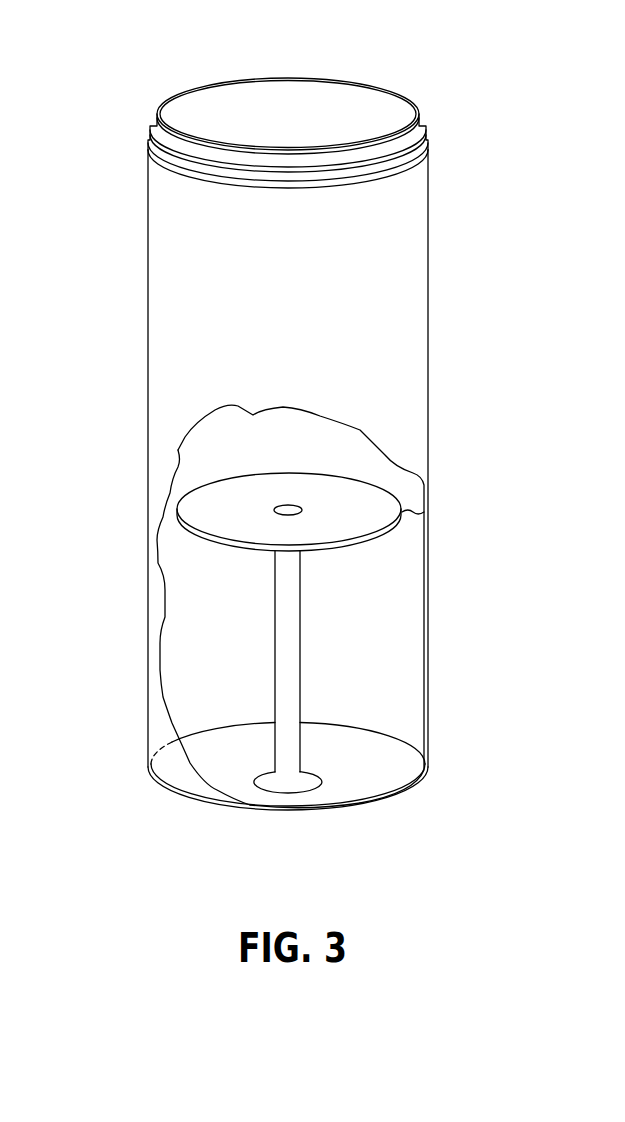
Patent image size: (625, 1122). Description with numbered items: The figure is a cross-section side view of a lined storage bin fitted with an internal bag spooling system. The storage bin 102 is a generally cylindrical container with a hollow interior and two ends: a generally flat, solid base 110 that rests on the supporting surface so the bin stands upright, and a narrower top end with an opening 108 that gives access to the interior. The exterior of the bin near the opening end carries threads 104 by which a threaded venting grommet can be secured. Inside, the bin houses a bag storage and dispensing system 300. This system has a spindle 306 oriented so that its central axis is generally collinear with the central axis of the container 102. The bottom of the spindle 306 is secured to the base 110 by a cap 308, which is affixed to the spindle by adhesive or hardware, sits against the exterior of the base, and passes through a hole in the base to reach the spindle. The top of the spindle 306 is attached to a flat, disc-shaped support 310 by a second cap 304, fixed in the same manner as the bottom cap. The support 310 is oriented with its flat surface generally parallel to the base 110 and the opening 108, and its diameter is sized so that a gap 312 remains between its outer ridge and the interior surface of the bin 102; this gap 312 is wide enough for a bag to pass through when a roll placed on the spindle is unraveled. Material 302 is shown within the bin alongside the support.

The storage bin 102 is at (148, 333).
The threads 104 is at (421, 118).
The opening 108 is at (234, 113).
The base 110 is at (367, 767).
The bag storage and dispensing system 300 is at (183, 655).
The fill material 302 is at (388, 618).
The second cap 304 is at (297, 502).
The spindle 306 is at (290, 742).
The cap 308 is at (287, 790).
The support 310 is at (175, 497).
The gap 312 is at (410, 514).